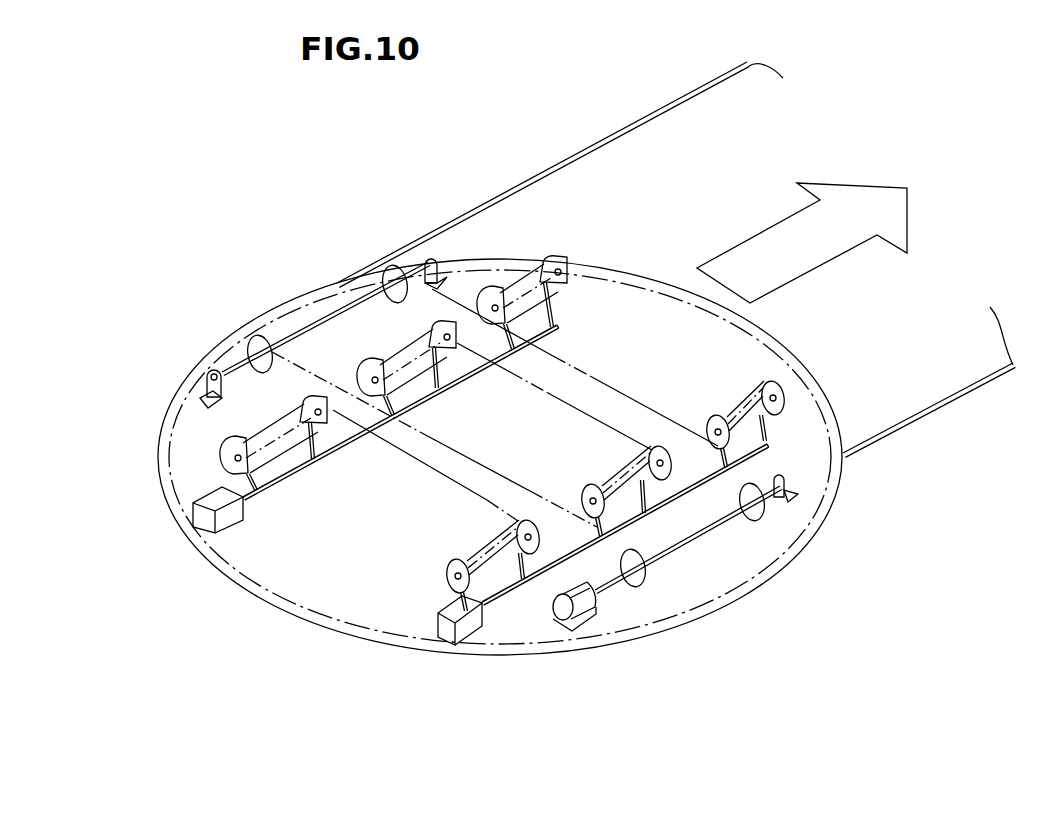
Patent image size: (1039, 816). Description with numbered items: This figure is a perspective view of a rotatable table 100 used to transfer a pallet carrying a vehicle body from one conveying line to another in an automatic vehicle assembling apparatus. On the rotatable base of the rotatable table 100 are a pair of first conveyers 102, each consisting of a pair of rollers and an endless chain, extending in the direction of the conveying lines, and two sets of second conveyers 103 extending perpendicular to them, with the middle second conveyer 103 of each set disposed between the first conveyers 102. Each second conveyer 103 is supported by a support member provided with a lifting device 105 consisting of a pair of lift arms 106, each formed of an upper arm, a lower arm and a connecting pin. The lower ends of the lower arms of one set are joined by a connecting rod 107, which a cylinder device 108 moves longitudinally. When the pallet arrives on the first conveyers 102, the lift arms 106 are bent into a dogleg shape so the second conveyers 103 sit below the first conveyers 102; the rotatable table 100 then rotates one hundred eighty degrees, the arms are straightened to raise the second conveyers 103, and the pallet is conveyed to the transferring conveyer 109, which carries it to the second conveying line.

The rotatable table 100 is at (408, 658).
The first conveyers 102 is at (626, 545).
The second conveyers 103 is at (562, 254).
The lifting device 105 is at (240, 481).
The lift arms 106 is at (327, 450).
The connecting rod 107 is at (297, 475).
The cylinder device 108 is at (237, 520).
The transferring conveyer 109 is at (927, 392).